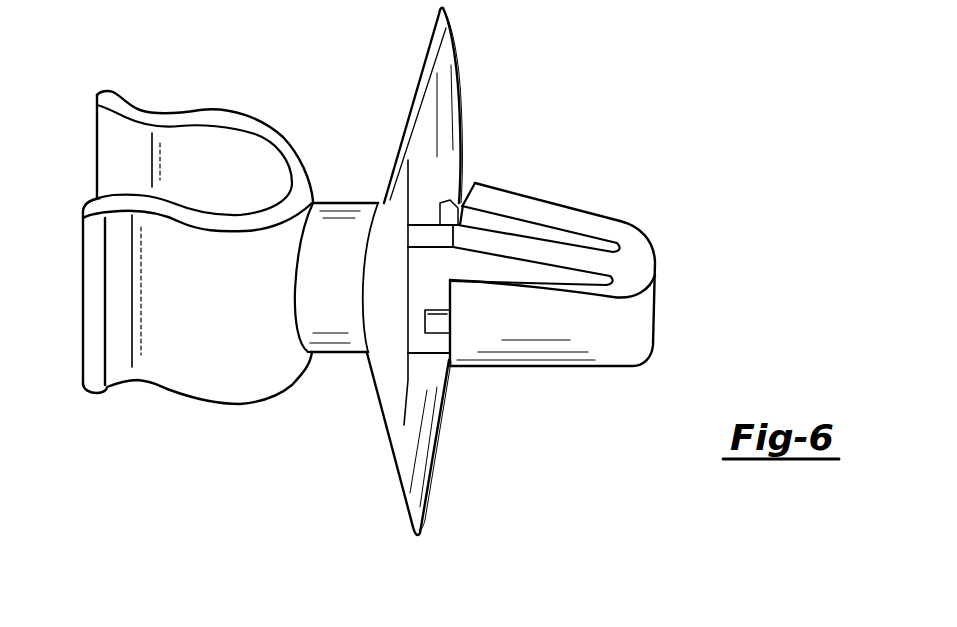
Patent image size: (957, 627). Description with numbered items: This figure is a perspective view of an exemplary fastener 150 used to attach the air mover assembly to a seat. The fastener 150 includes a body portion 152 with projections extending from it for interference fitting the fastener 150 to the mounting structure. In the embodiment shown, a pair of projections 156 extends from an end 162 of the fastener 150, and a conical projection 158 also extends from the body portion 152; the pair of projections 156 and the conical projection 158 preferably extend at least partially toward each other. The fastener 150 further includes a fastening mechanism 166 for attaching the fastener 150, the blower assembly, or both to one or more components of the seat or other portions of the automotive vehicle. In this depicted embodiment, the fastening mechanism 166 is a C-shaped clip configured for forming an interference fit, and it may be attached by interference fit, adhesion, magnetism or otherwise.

The fastener 150 is at (400, 271).
The body portion 152 is at (337, 222).
The pair of projections 156 is at (555, 288).
The conical projection 158 is at (443, 60).
The end of the fastener 162 is at (581, 245).
The fastening mechanism 166 is at (152, 418).